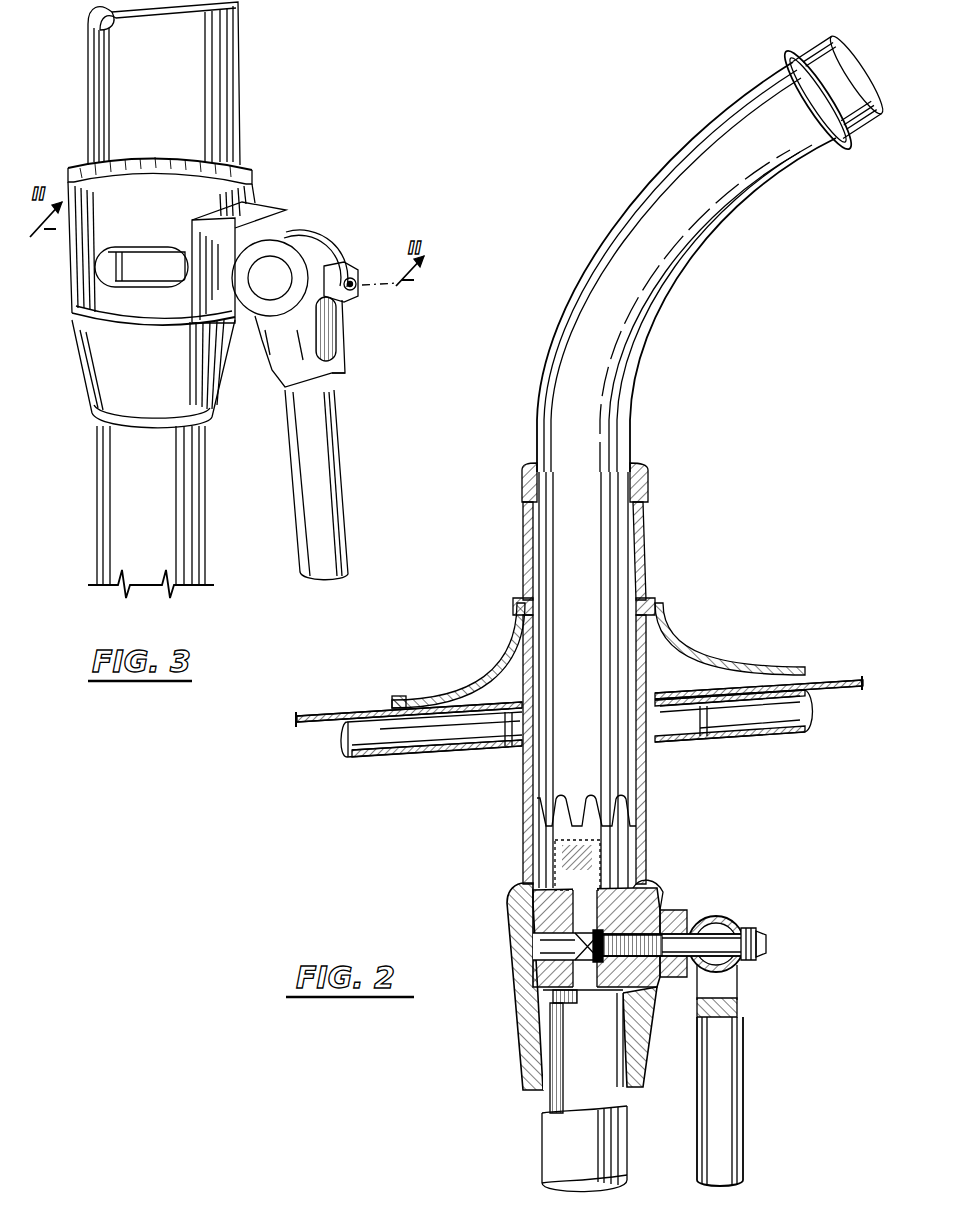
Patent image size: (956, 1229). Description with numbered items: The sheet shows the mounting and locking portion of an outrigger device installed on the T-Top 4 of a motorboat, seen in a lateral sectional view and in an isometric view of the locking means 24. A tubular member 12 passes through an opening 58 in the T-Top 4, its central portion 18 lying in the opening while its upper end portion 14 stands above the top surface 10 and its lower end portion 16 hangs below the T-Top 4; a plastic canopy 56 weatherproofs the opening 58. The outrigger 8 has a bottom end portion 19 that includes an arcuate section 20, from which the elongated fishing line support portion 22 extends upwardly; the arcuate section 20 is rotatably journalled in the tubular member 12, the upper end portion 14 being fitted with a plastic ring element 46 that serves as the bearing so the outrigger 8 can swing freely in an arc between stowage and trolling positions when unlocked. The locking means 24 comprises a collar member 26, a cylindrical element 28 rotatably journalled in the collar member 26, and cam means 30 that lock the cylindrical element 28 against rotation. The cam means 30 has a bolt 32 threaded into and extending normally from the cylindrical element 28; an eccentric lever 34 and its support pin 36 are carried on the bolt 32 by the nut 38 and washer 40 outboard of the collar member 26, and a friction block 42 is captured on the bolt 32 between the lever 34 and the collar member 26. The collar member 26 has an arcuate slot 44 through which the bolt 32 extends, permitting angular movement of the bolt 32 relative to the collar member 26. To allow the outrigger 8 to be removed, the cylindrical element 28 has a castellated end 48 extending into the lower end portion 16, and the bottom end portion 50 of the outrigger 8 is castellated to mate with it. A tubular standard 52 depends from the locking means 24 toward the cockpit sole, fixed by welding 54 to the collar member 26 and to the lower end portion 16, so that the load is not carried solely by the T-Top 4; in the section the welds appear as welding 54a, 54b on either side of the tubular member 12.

In FIG. 2, the T-Top 4 is at (360, 706).
In FIG. 2, the outrigger 8 is at (826, 46).
In FIG. 2, the top surface 10 is at (316, 714).
In FIG. 2, the tubular member 12 is at (650, 572).
In FIG. 2, the upper end portion 14 is at (645, 532).
In FIG. 2, the lower end portion 16 is at (646, 856).
In FIG. 2, the central portion 18 is at (647, 760).
In FIG. 2, the bottom end portion 19 is at (736, 96).
In FIG. 2, the arcuate section 20 is at (662, 320).
In FIG. 2, the fishing line support portion 22 is at (858, 116).
In FIG. 3, the locking means 24 is at (254, 186).
In FIG. 2, the locking means 24 is at (504, 984).
In FIG. 3, the collar member 26 is at (190, 378).
In FIG. 2, the collar member 26 is at (670, 905).
In FIG. 2, the cylindrical element 28 is at (624, 852).
In FIG. 2, the cam means 30 is at (734, 918).
In FIG. 2, the bolt 32 is at (688, 915).
In FIG. 3, the eccentric lever 34 is at (318, 420).
In FIG. 2, the eccentric lever 34 is at (728, 1066).
In FIG. 3, the support pin 36 is at (283, 290).
In FIG. 2, the support pin 36 is at (750, 928).
In FIG. 3, the nut 38 is at (352, 266).
In FIG. 2, the nut 38 is at (768, 942).
In FIG. 2, the washer 40 is at (748, 970).
In FIG. 3, the friction block 42 is at (272, 232).
In FIG. 2, the friction block 42 is at (677, 985).
In FIG. 3, the arcuate slot 44 is at (176, 270).
In FIG. 2, the plastic ring element 46 is at (644, 468).
In FIG. 2, the castellated end 48 is at (622, 822).
In FIG. 2, the bottom end portion 50 is at (560, 766).
In FIG. 2, the tubular standard 52 is at (562, 1140).
In FIG. 2, the welding 54 is at (542, 1088).
In FIG. 2, the left cross tube 54a is at (365, 748).
In FIG. 2, the right cross tube 54b is at (788, 732).
In FIG. 2, the plastic canopy 56 is at (688, 668).
In FIG. 2, the opening 58 is at (520, 695).